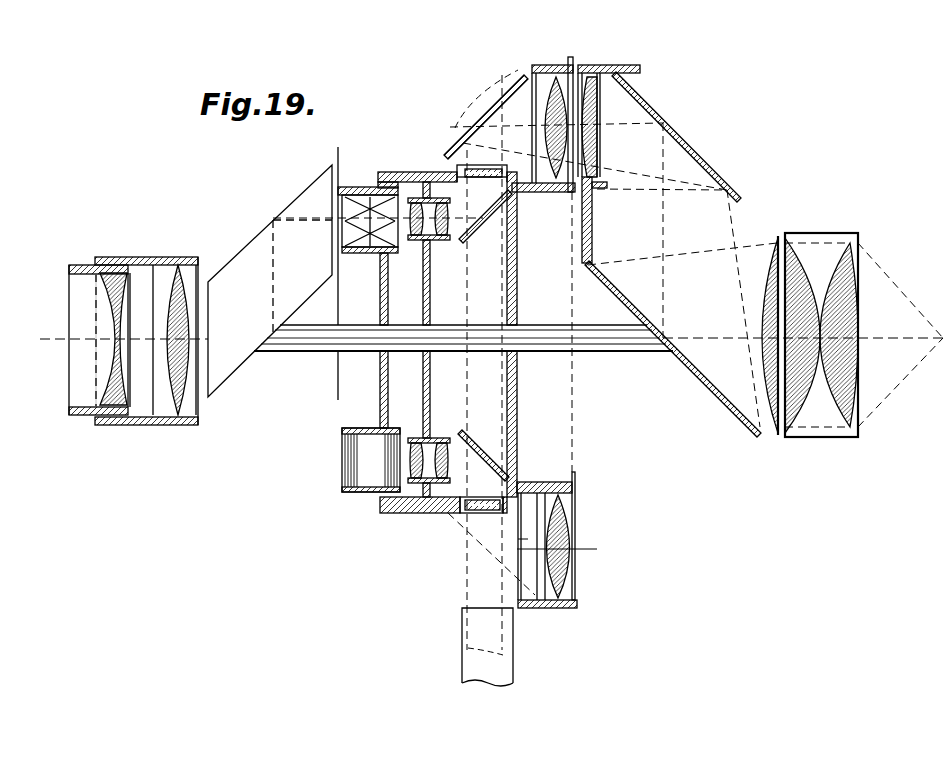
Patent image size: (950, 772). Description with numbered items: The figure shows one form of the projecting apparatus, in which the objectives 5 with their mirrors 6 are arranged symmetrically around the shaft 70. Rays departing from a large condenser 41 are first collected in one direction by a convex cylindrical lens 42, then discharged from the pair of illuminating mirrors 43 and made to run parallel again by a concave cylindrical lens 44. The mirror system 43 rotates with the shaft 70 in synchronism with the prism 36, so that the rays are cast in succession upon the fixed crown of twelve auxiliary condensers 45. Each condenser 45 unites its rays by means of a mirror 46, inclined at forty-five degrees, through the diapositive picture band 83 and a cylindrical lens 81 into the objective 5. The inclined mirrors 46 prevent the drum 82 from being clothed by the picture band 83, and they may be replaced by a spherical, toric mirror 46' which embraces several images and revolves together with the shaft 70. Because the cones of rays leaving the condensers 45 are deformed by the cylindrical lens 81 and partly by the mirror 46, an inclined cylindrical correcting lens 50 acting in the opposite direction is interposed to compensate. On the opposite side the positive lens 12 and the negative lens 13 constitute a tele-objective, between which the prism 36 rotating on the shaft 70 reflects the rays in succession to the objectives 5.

The negative lens 13 is at (110, 308).
The positive lens 12 is at (182, 278).
The prism 36 is at (298, 298).
The drum 82 is at (458, 170).
The cylindrical lens 81 is at (482, 168).
The objective 5 is at (432, 226).
The mirror 6 is at (479, 231).
The shaft 70 is at (472, 328).
The mirror 46 is at (486, 107).
The spherical toric mirror 46' is at (486, 96).
The auxiliary condenser 45 is at (554, 76).
The concave cylindrical lens 44 is at (595, 74).
The illuminating mirror 43 is at (703, 165).
The convex cylindrical lens 42 is at (778, 240).
The condenser 41 is at (838, 281).
The cylindrical correcting lens 50 is at (543, 607).
The diapositive picture band 83 is at (505, 641).